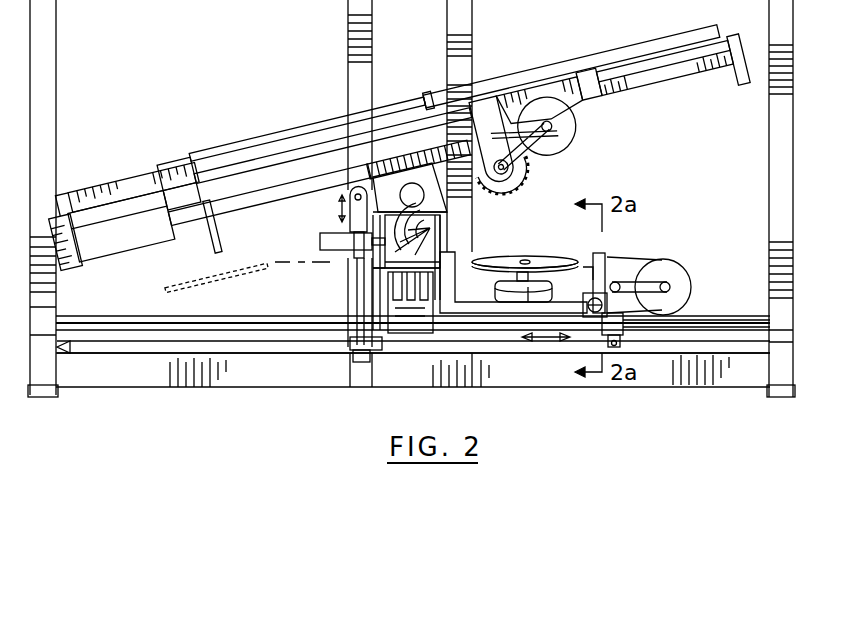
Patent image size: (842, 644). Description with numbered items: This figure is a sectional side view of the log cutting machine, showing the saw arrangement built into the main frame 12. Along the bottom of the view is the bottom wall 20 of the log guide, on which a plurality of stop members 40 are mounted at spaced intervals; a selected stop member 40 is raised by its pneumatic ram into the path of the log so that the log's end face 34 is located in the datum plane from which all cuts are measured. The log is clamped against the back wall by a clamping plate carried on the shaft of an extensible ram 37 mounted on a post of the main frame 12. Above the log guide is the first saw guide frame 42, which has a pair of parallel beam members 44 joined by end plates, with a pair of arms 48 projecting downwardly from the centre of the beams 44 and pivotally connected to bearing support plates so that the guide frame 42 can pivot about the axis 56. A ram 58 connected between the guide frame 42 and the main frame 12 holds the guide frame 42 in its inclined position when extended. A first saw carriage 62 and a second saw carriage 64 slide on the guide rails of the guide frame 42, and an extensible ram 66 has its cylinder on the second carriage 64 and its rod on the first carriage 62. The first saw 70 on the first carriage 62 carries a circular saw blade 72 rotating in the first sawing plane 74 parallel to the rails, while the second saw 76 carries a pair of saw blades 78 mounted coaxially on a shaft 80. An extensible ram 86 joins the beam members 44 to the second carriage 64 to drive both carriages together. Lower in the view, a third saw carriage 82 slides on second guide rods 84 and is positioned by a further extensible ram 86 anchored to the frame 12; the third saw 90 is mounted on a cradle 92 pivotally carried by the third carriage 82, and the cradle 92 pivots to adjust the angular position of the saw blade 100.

The main frame 12 is at (135, 375).
The bottom wall 20 is at (385, 266).
The end face 34 is at (420, 230).
The extensible ram 37 is at (322, 240).
The stop member 40 is at (407, 300).
The first saw guide frame 42 is at (87, 250).
The beam member 44 is at (113, 240).
The arm 48 is at (399, 178).
The axis 56 is at (440, 197).
The ram 58 is at (358, 303).
The first saw carriage 62 is at (122, 186).
The second saw carriage 64 is at (578, 73).
The extensible ram 66 is at (591, 63).
The first saw 70 is at (167, 197).
The circular saw blade 72 is at (180, 279).
The first sawing plane 74 is at (112, 298).
The second saw 76 is at (568, 139).
The saw blade 78 is at (525, 183).
The shaft 80 is at (508, 167).
The third saw carriage 82 is at (483, 308).
The second guide rods 84 is at (692, 320).
The extensible ram 86 is at (270, 162).
The third saw 90 is at (535, 300).
The cradle 92 is at (600, 255).
The saw blade 100 is at (550, 262).